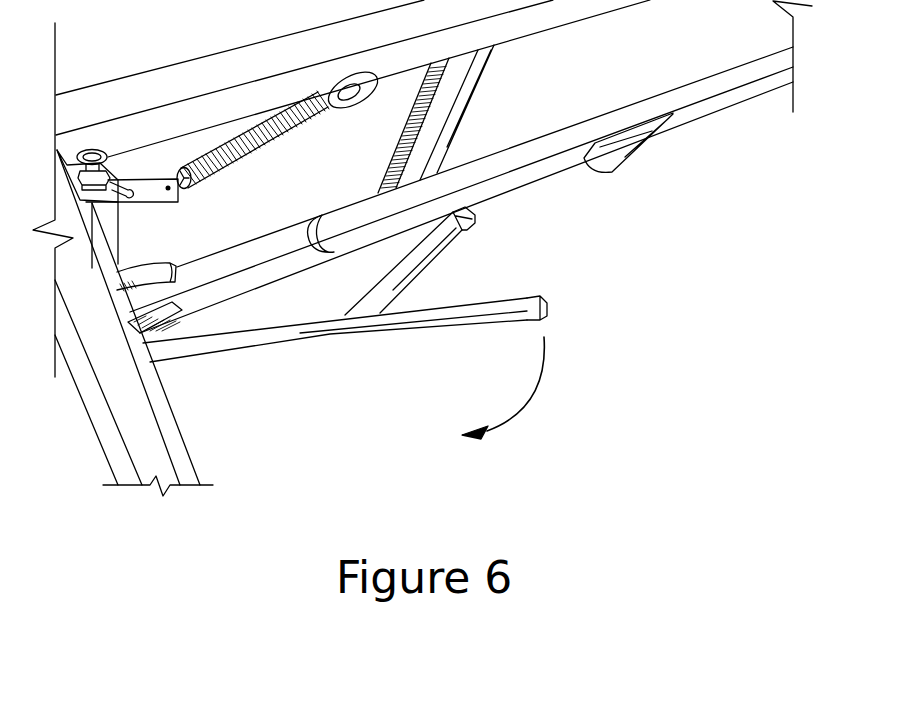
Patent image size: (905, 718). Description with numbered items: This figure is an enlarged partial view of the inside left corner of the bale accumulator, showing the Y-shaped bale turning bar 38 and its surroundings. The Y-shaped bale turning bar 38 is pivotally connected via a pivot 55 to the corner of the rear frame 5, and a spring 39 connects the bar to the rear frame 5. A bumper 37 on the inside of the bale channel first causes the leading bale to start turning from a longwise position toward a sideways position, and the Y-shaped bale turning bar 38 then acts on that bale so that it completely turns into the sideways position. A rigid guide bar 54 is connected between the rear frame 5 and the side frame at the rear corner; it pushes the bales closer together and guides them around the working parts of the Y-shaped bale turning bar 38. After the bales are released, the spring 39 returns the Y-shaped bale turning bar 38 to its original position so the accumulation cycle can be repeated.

The rear frame 5 is at (146, 430).
The bumper 37 is at (610, 165).
The Y-shaped bale turning bar 38 is at (348, 330).
The spring 39 is at (270, 115).
The rigid guide bar 54 is at (295, 232).
The pivot 55 is at (106, 150).